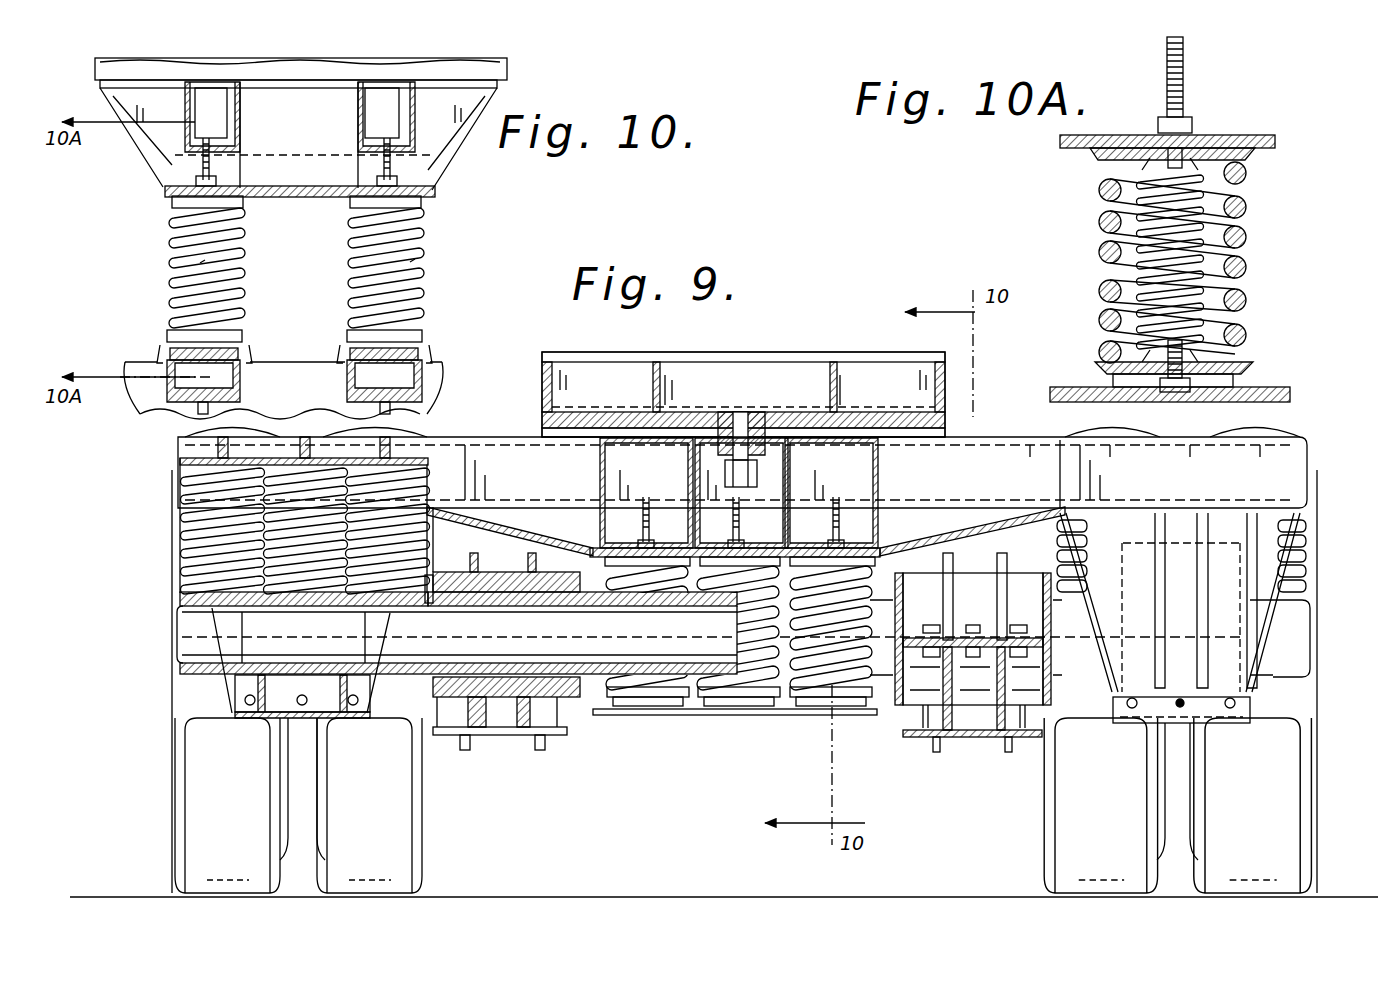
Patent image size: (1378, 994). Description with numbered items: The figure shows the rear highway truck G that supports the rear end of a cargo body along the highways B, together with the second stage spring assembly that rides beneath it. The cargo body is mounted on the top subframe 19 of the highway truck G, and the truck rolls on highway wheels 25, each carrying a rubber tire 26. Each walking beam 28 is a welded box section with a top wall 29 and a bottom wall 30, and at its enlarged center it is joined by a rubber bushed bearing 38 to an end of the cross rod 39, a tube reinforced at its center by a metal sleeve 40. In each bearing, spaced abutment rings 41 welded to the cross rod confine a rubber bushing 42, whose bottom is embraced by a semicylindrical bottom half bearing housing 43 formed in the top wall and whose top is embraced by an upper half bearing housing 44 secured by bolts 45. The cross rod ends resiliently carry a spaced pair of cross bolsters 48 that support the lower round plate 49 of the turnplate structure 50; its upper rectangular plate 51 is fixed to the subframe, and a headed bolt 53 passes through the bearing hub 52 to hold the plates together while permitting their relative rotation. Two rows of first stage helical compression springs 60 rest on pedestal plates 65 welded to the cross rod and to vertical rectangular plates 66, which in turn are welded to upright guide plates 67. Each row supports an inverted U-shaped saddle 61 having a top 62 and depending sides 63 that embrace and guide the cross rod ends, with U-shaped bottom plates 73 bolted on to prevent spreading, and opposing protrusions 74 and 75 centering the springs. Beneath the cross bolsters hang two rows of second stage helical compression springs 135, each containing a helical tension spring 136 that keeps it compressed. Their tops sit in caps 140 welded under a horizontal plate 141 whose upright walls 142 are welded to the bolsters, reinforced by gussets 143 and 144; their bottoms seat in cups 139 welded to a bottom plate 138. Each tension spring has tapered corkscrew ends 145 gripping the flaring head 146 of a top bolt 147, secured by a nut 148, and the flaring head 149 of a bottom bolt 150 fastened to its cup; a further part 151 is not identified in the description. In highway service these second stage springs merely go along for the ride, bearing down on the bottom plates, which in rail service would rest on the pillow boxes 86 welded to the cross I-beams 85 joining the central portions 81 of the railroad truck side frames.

In FIG. 9, the top subframe 19 is at (640, 350).
In FIG. 9, the highway wheels 25 is at (338, 897).
In FIG. 9, the rubber tire 26 is at (252, 824).
In FIG. 9, the walking beam 28 is at (980, 752).
In FIG. 9, the top wall 29 is at (488, 736).
In FIG. 9, the bottom wall 30 is at (583, 735).
In FIG. 9, the rubber bushed bearing 38 is at (458, 570).
In FIG. 9, the cross rod 39 is at (222, 675).
In FIG. 9, the metal sleeve 40 is at (612, 690).
In FIG. 9, the abutment rings 41 is at (598, 713).
In FIG. 9, the rubber bushing 42 is at (488, 740).
In FIG. 9, the bottom half bearing housing 43 is at (497, 678).
In FIG. 9, the upper half bearing housing 44 is at (483, 572).
In FIG. 9, the bolts 45 is at (935, 624).
In FIG. 10, the cross bolsters 48 is at (205, 82).
In FIG. 9, the cross bolsters 48 is at (985, 440).
In FIG. 9, the lower round plate 49 is at (893, 430).
In FIG. 9, the turnplate structure 50 is at (955, 425).
In FIG. 9, the upper rectangular plate 51 is at (852, 433).
In FIG. 9, the bearing hub 52 is at (735, 412).
In FIG. 9, the headed bolt 53 is at (765, 440).
In FIG. 9, the first stage helical compression springs 60 is at (202, 520).
In FIG. 9, the saddle 61 is at (228, 694).
In FIG. 9, the saddle top 62 is at (410, 448).
In FIG. 9, the saddle sides 63 is at (238, 712).
In FIG. 9, the pedestal plate 65 is at (180, 597).
In FIG. 9, the vertical rectangular plates 66 is at (205, 547).
In FIG. 9, the guide plates 67 is at (1245, 593).
In FIG. 9, the U-shaped bottom plates 73 is at (257, 723).
In FIG. 9, the protrusions 74 is at (160, 488).
In FIG. 9, the protrusions 75 is at (203, 570).
In FIG. 10, the central portions of side frame beams 81 is at (140, 360).
In FIG. 10, the cross I-beams 85 is at (237, 392).
In FIG. 10, the pillow box 86 is at (232, 367).
In FIG. 10, the second stage helical compression springs 135 is at (175, 283).
In FIG. 10A, the second stage helical compression springs 135 is at (1240, 290).
In FIG. 9, the second stage helical compression springs 135 is at (706, 552).
In FIG. 10, the helical tension springs 136 is at (200, 263).
In FIG. 10A, the helical tension springs 136 is at (1142, 278).
In FIG. 10, the bottom plate 138 is at (240, 348).
In FIG. 10A, the bottom plate 138 is at (1290, 397).
In FIG. 9, the bottom plate 138 is at (708, 717).
In FIG. 10, the cups 139 is at (190, 330).
In FIG. 10A, the cups 139 is at (1100, 362).
In FIG. 9, the cups 139 is at (640, 703).
In FIG. 10, the caps 140 is at (172, 202).
In FIG. 10A, the caps 140 is at (1252, 160).
In FIG. 9, the caps 140 is at (637, 547).
In FIG. 10, the horizontal plate 141 is at (170, 191).
In FIG. 10A, the horizontal plate 141 is at (1244, 137).
In FIG. 9, the horizontal plate 141 is at (735, 552).
In FIG. 10, the upright walls 142 is at (358, 100).
In FIG. 10, the gussets 143 is at (112, 100).
In FIG. 9, the gussets 143 is at (690, 455).
In FIG. 9, the gussets 144 is at (555, 537).
In FIG. 10A, the corkscrew ends 145 is at (1150, 150).
In FIG. 10A, the flaring head 146 is at (1107, 190).
In FIG. 10, the bolt 147 is at (296, 162).
In FIG. 10A, the bolt 147 is at (1167, 48).
In FIG. 9, the bolt 147 is at (665, 503).
In FIG. 10A, the nut 148 is at (1187, 117).
In FIG. 9, the nut 148 is at (828, 548).
In FIG. 10A, the flaring head 149 is at (1253, 312).
In FIG. 10A, the bolt 150 is at (1175, 394).
In FIG. 10, the retainer lugs 151 is at (158, 345).
In FIG. 10, the highway truck G is at (535, 63).
In FIG. 10A, the highway truck G is at (1220, 115).
In FIG. 9, the highways B is at (718, 893).